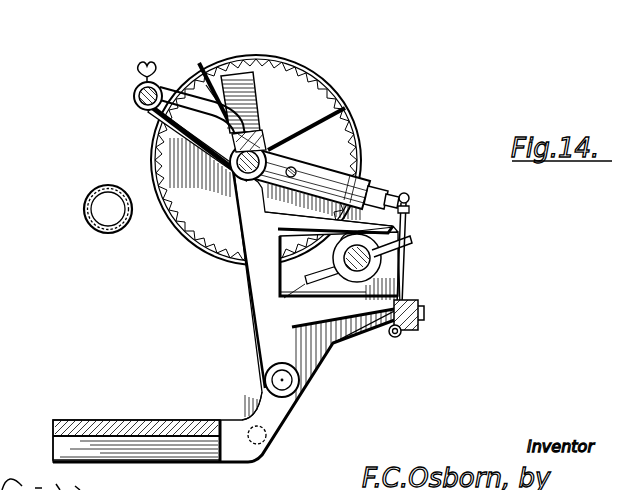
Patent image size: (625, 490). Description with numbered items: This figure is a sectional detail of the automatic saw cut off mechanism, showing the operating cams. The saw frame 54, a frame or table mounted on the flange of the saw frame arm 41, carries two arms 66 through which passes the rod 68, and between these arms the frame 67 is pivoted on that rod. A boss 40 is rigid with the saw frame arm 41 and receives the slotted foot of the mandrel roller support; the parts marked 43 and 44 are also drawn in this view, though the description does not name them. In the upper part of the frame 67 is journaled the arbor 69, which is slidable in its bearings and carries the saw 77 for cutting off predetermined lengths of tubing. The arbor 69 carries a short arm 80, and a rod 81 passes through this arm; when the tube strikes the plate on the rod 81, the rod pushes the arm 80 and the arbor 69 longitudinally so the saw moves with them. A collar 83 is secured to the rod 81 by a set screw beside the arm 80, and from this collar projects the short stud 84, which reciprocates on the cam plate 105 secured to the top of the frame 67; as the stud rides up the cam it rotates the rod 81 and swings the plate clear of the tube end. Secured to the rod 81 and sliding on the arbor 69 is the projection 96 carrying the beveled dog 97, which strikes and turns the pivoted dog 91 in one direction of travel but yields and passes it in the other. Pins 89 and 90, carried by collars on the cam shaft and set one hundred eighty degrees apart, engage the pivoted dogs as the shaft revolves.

The boss 40 is at (384, 224).
The saw frame arm 41 is at (402, 299).
The ball joint 43 is at (374, 336).
The gear wheel 44 is at (158, 166).
The saw frame 54 is at (104, 422).
The arms 66 is at (270, 427).
The frame 67 is at (268, 333).
The rod 68 is at (280, 380).
The arbor 69 is at (297, 173).
The saw 77 is at (83, 212).
The short arm 80 is at (240, 170).
The rod 81 is at (133, 97).
The collar 83 is at (142, 113).
The stud 84 is at (204, 86).
The pin 89 is at (318, 280).
The pin 90 is at (408, 242).
The pivoted dog 91 is at (402, 281).
The projection 96 is at (364, 174).
The beveled dog 97 is at (407, 194).
The cam plate 105 is at (240, 78).